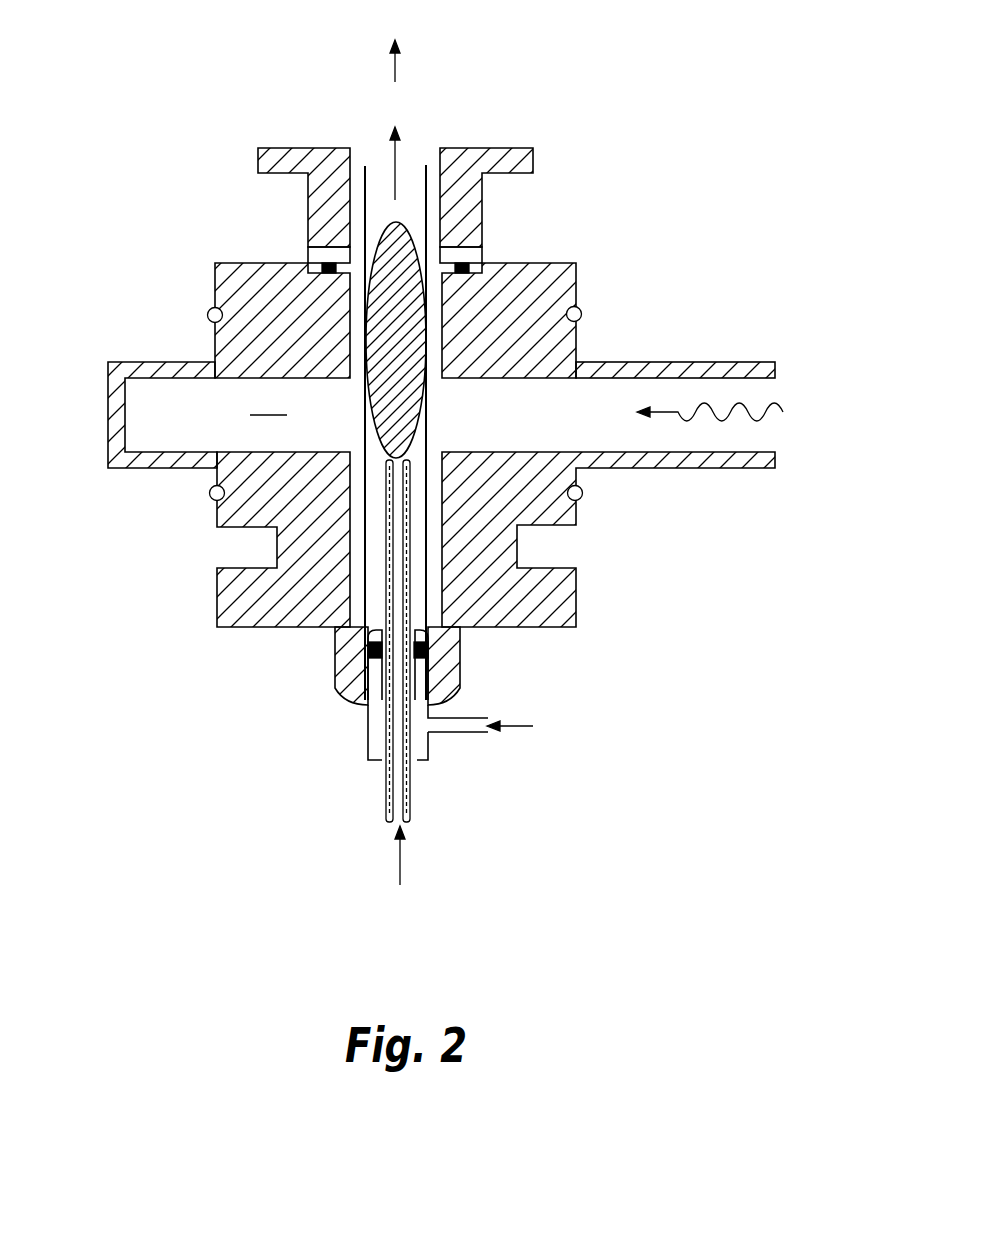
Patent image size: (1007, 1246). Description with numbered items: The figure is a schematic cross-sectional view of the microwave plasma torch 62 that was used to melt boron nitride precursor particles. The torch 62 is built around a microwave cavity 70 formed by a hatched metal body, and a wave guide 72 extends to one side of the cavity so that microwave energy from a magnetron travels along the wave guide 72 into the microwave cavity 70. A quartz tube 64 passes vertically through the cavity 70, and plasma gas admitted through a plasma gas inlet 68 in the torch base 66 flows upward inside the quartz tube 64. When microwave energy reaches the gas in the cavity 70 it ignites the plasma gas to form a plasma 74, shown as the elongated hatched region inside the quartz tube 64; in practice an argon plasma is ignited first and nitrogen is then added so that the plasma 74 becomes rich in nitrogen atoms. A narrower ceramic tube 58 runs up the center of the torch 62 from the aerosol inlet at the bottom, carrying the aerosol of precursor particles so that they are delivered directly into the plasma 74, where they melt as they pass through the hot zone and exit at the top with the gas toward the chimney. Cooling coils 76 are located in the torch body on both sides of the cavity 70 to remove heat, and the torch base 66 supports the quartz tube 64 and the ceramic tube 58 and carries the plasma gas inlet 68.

The plasma torch 62 is at (186, 129).
The microwave cavity 70 is at (483, 412).
The wave guide 72 is at (603, 352).
The plasma 74 is at (400, 337).
The cooling coil 76 is at (790, 547).
The quartz tube 64 is at (430, 488).
The ceramic tube 58 is at (445, 796).
The torch base 66 is at (382, 760).
The plasma gas inlet 68 is at (475, 718).